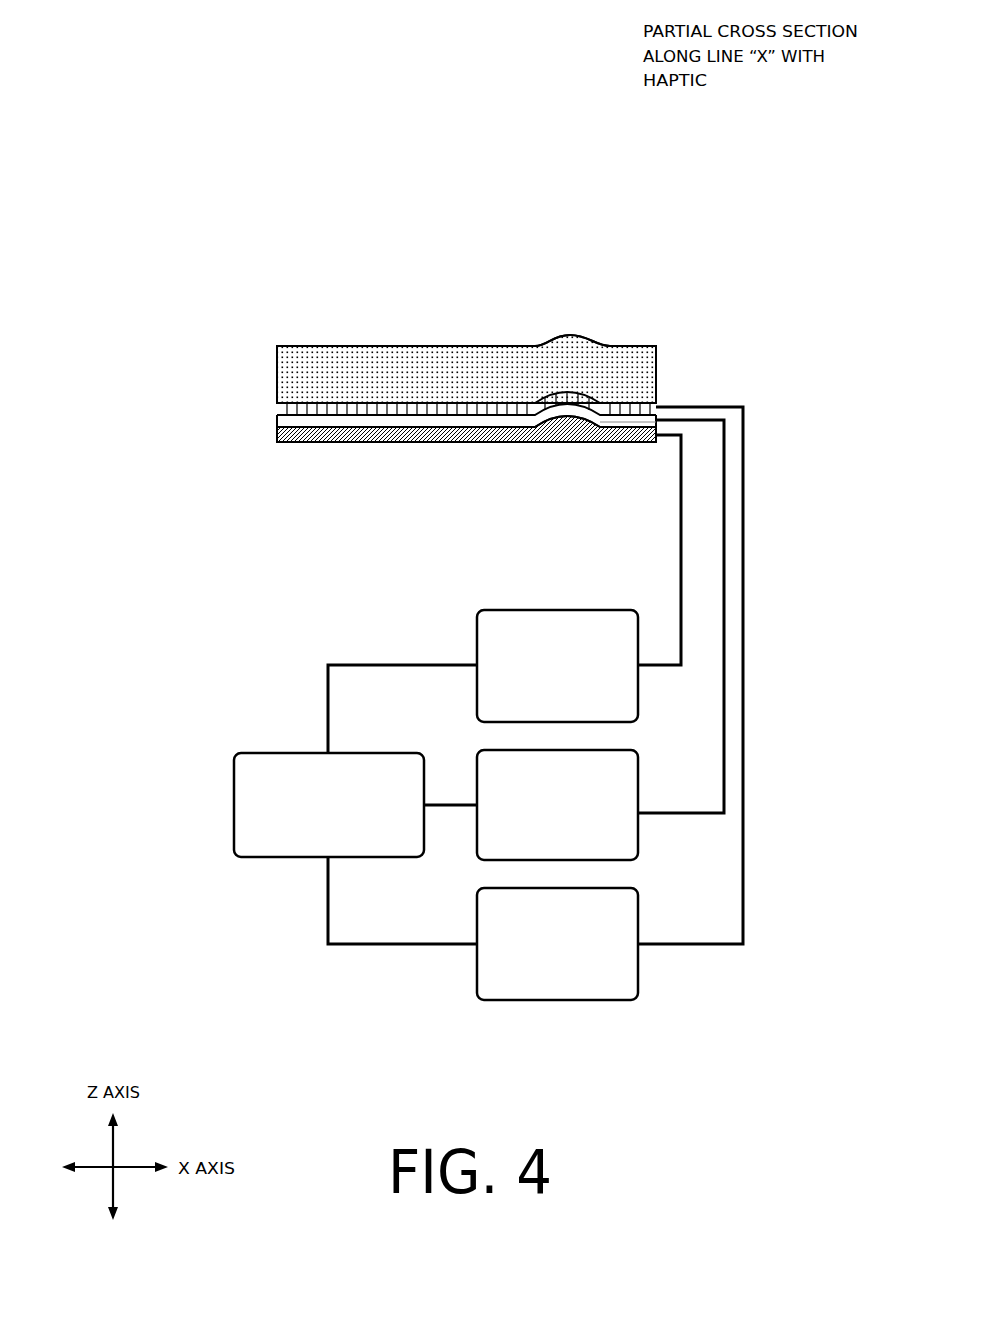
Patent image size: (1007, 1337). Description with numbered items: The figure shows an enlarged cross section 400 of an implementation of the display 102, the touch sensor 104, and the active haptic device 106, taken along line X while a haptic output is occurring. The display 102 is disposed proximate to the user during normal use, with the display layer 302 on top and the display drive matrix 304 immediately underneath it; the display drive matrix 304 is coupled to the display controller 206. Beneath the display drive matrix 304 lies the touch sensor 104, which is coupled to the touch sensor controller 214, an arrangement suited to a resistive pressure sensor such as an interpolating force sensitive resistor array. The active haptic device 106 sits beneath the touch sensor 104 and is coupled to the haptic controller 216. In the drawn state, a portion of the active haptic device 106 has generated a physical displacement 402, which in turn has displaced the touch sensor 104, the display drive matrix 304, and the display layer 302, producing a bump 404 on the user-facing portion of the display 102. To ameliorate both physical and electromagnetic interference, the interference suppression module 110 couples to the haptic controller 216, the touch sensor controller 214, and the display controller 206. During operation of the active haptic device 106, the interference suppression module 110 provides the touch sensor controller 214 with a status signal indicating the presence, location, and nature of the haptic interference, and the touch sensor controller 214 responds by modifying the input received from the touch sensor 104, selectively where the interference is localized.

The enlarged cross section 400 is at (592, 112).
The display 102 is at (243, 344).
The display layer 302 is at (487, 365).
The display drive matrix 304 is at (428, 408).
The touch sensor 104 is at (305, 419).
The active haptic device 106 is at (403, 435).
The bump 404 is at (594, 325).
The physical displacement 402 is at (598, 411).
The haptic controller 216 is at (557, 666).
The touch sensor controller 214 is at (557, 805).
The display controller 206 is at (557, 944).
The interference suppression module 110 is at (329, 805).